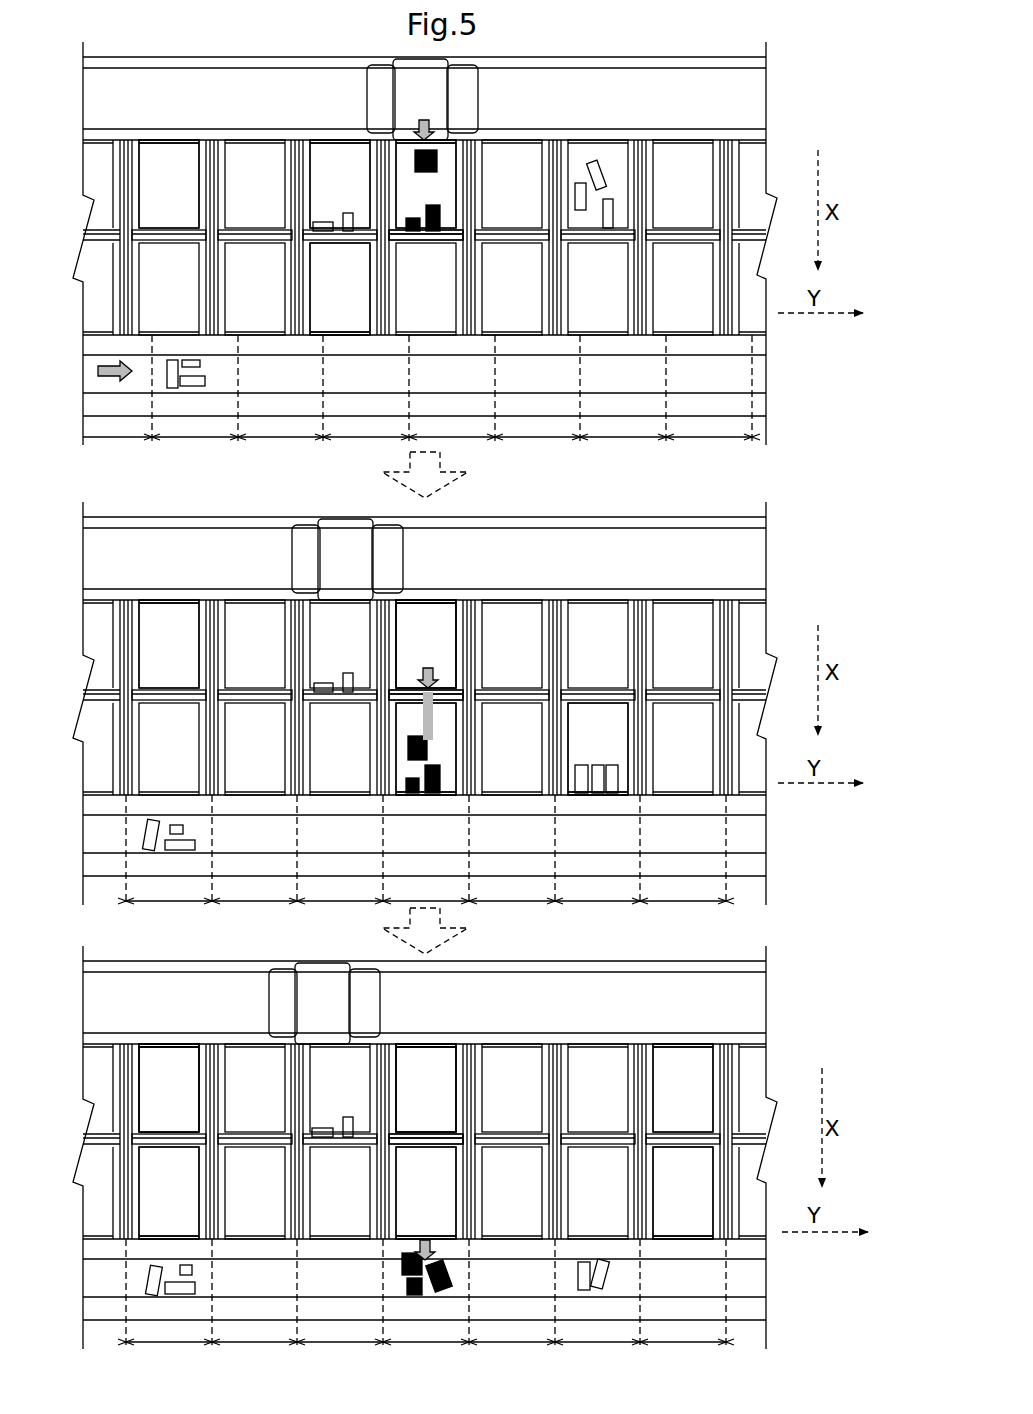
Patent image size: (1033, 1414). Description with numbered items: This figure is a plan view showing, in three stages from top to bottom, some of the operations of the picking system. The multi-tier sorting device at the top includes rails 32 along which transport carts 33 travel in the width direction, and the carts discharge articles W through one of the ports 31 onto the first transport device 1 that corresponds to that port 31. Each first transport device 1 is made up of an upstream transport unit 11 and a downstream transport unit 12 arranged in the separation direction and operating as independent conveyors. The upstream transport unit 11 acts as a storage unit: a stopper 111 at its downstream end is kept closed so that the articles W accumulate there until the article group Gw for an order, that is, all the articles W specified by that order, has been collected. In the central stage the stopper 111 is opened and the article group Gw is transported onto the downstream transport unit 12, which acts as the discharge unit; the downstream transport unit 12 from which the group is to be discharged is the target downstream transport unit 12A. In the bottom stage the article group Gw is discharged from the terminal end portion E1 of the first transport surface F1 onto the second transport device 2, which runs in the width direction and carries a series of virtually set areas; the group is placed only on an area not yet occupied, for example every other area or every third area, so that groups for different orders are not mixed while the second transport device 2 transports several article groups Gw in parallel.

The first transport device 1 is at (298, 140).
The second transport device 2 is at (97, 423).
The upstream transport unit 11 is at (380, 163).
The downstream transport unit 12 is at (388, 266).
The target downstream transport unit 12A is at (453, 718).
The stopper 111 is at (455, 235).
The port 31 is at (162, 152).
The rail 32 is at (640, 135).
The transport cart 33 is at (478, 92).
The article W is at (348, 213).
The article group Gw is at (408, 757).
The first transport surface F1 is at (262, 1160).
The terminal end portion E1 is at (150, 1240).